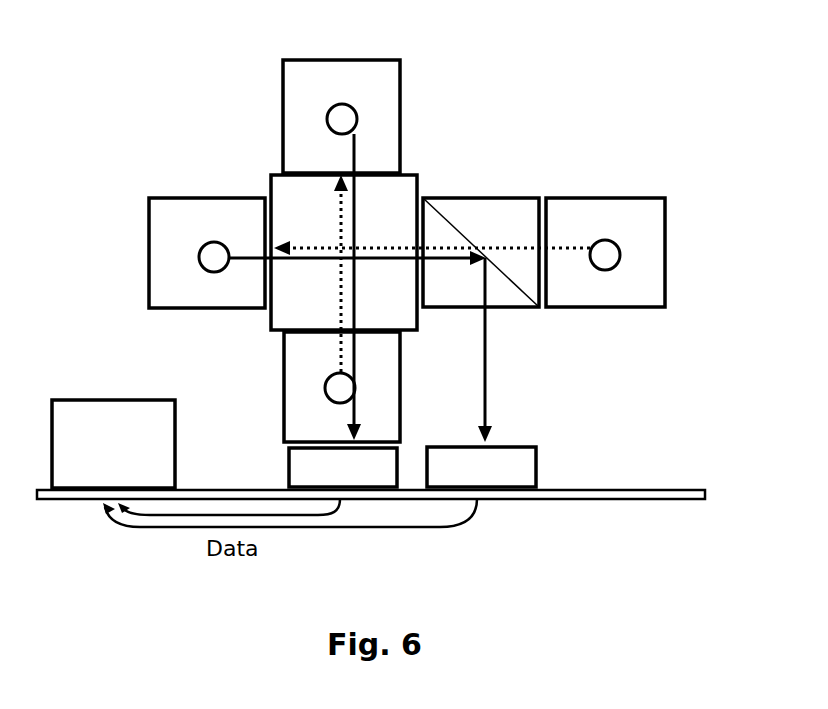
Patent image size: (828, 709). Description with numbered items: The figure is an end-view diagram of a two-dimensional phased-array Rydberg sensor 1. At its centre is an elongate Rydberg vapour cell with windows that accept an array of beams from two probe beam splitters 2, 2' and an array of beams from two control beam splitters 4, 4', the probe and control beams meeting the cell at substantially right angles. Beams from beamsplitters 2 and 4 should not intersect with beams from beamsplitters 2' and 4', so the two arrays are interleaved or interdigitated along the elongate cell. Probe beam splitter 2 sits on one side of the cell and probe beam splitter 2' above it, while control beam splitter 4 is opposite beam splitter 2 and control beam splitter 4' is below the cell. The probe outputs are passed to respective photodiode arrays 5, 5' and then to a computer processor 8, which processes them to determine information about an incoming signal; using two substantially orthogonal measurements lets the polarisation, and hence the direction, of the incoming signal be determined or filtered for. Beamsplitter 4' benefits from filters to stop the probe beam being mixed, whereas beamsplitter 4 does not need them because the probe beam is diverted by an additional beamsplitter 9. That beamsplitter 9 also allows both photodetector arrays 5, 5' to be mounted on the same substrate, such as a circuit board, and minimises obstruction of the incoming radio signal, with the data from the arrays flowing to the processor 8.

The imaging device 1 is at (371, 313).
The probe beam splitter 2 is at (207, 232).
The probe beam splitter 2' is at (341, 93).
The control beam splitter 4 is at (605, 230).
The control beam splitter 4' is at (312, 387).
The photodiode array 5 is at (503, 467).
The photodiode array 5' is at (314, 467).
The computer processor 8 is at (113, 444).
The additional beamsplitter 9 is at (481, 230).